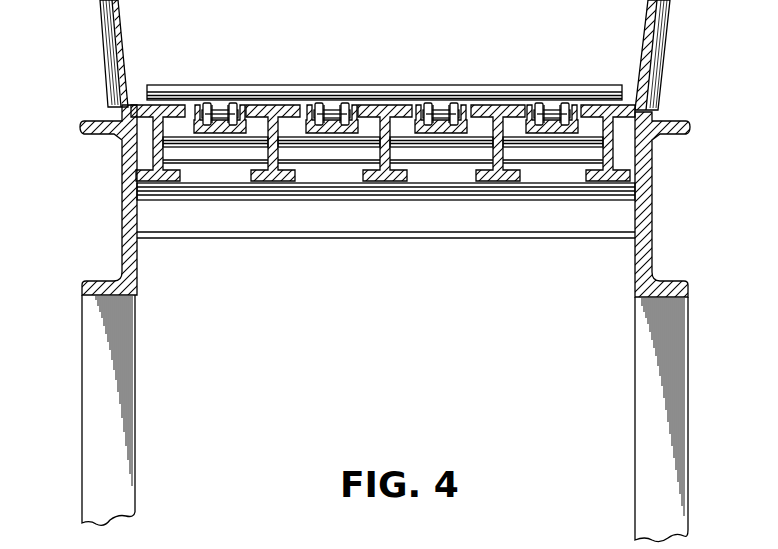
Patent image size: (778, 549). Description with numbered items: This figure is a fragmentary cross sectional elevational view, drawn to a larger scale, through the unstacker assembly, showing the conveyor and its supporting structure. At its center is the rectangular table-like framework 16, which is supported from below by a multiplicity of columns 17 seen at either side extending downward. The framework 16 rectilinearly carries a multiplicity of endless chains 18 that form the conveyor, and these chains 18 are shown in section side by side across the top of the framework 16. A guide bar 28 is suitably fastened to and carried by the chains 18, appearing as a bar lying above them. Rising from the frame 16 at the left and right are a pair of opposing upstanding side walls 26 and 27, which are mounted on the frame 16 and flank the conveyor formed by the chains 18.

The framework 16 is at (425, 233).
The columns 17 is at (133, 378).
The endless chains 18 is at (218, 105).
The upstanding side wall 26 is at (668, 24).
The upstanding side wall 27 is at (100, 12).
The guide bar 28 is at (282, 90).